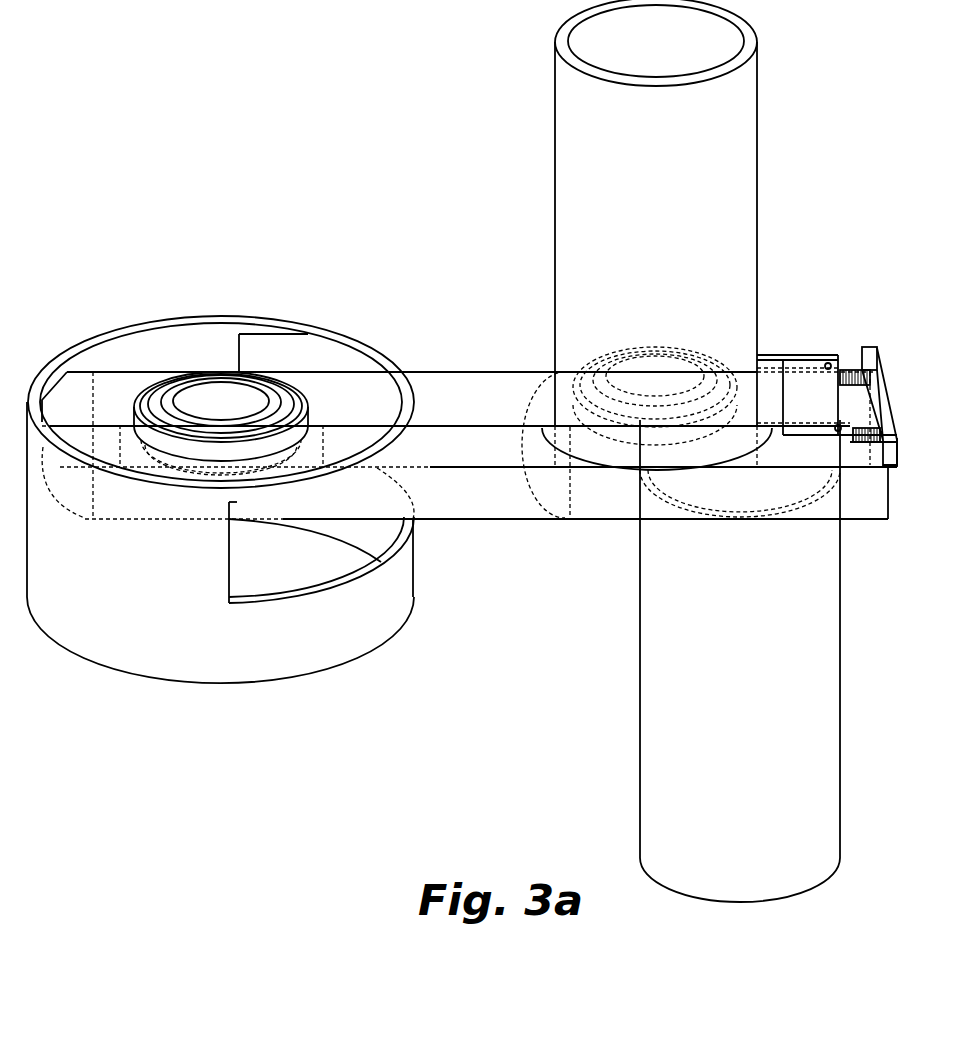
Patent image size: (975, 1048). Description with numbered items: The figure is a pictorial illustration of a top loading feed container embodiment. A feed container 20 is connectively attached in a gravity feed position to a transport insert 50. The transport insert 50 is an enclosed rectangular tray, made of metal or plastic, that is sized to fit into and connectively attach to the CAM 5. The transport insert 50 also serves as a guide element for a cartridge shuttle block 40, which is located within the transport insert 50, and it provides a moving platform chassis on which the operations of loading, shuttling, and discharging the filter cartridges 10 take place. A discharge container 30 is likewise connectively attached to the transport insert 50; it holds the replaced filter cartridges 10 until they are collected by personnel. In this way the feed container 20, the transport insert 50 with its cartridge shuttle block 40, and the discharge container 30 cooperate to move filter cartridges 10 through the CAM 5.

The CAM 5 is at (160, 600).
The filter cartridge 10 is at (244, 413).
The feed container 20 is at (675, 175).
The discharge container 30 is at (756, 594).
The cartridge shuttle block 40 is at (533, 392).
The transport insert 50 is at (466, 511).